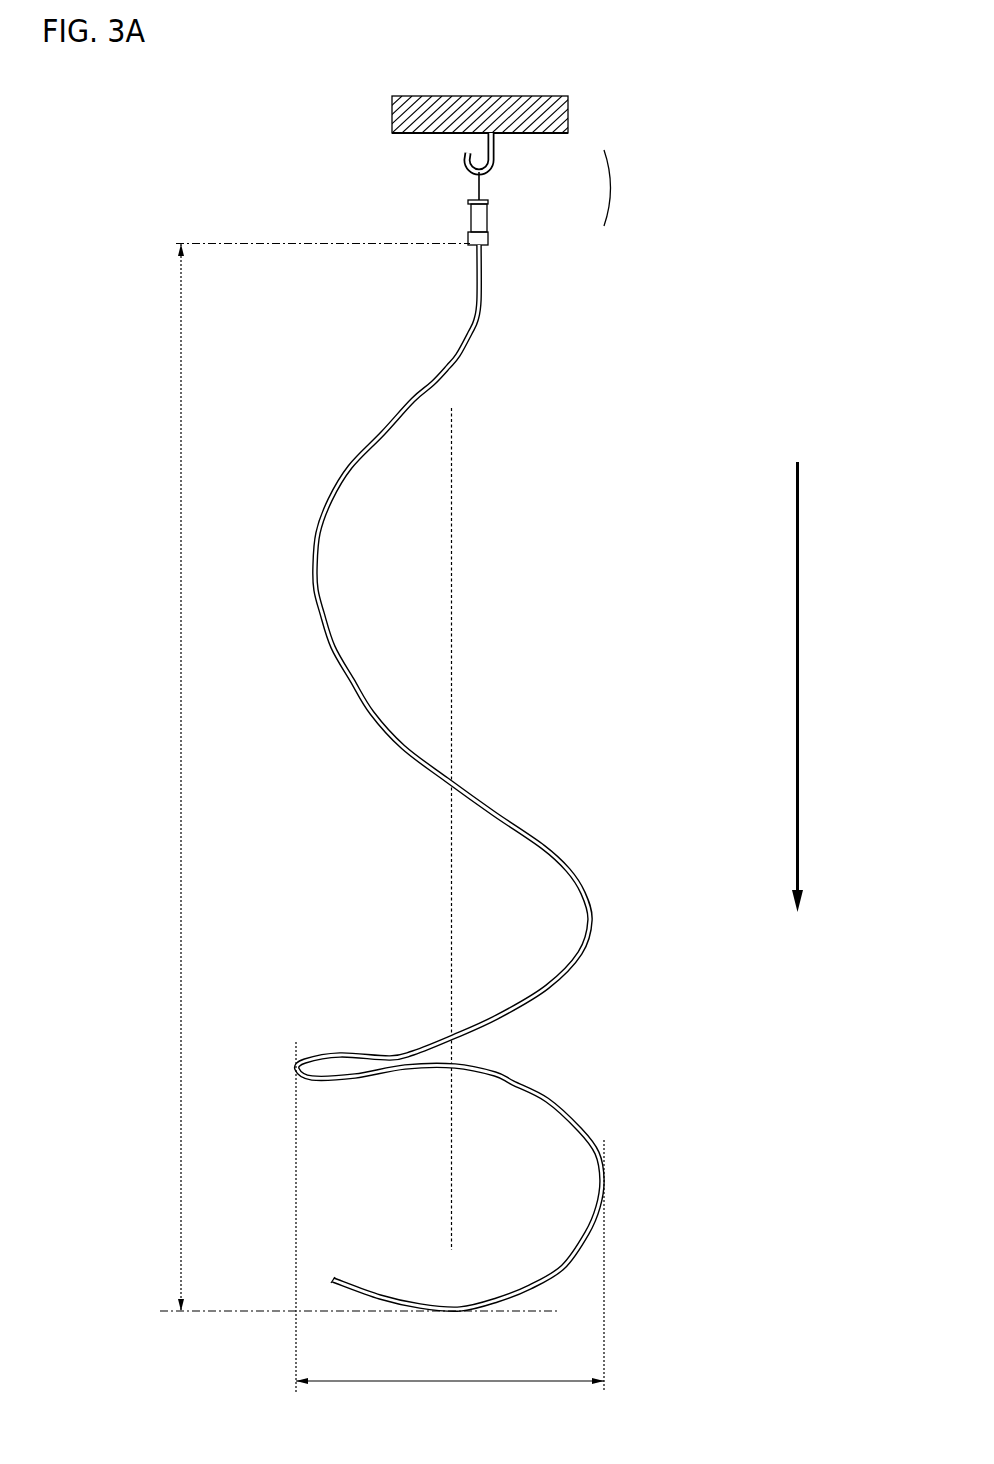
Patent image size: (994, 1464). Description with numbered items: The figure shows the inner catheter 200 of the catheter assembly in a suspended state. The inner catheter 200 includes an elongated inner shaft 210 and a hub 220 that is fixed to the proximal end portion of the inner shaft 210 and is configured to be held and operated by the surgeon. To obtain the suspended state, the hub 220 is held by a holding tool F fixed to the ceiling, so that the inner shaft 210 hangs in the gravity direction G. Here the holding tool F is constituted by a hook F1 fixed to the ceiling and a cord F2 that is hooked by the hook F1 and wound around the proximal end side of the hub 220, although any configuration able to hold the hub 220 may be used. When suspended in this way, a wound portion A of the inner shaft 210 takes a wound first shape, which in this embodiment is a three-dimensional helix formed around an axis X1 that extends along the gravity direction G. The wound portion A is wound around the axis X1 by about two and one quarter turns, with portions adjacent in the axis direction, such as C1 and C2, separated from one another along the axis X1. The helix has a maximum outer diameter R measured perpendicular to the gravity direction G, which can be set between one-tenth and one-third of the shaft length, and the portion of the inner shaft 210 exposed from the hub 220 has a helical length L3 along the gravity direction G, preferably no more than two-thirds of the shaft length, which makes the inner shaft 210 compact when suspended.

The inner catheter 200 is at (449, 740).
The inner shaft 210 is at (476, 343).
The hub 220 is at (490, 222).
The hook F1 is at (496, 152).
The cord F2 is at (482, 185).
The holding tool F is at (618, 188).
The wound portion A is at (335, 461).
The axis X1 is at (452, 435).
The helical length L3 is at (354, 778).
The maximum outer diameter R is at (450, 1217).
The gravity direction G is at (812, 687).
The portion of the wound portion C1 is at (590, 925).
The portion of the wound portion C2 is at (606, 1190).